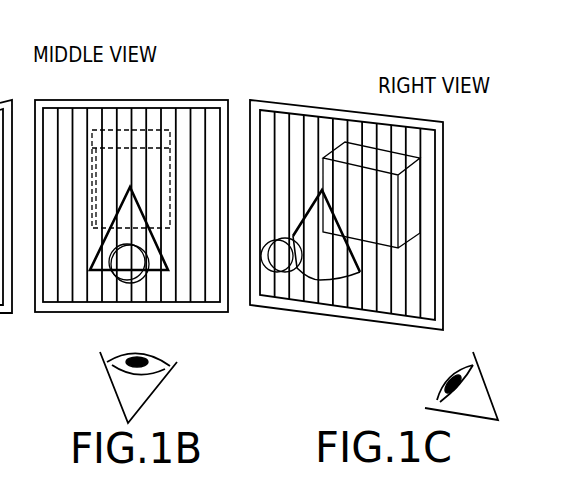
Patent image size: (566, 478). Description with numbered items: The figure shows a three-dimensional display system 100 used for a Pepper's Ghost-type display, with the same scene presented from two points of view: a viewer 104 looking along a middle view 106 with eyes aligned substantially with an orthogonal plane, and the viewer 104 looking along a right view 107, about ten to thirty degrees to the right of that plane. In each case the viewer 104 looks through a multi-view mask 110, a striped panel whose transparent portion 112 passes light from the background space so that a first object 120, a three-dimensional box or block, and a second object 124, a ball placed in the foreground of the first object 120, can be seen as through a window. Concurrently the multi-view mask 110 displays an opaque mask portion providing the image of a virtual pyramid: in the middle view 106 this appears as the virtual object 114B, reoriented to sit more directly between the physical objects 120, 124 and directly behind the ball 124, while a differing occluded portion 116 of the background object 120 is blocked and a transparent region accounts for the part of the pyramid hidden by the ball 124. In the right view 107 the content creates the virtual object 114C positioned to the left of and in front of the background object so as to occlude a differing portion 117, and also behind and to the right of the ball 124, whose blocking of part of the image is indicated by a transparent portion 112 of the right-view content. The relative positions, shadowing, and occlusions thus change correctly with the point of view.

In FIG. 1B, the 3D display system 100 is at (213, 80).
In FIG. 1C, the 3D display system 100 is at (460, 182).
In FIG. 1B, the viewer 104 is at (160, 385).
In FIG. 1C, the viewer 104 is at (490, 390).
In FIG. 1B, the middle view 106 is at (136, 321).
In FIG. 1C, the right view 107 is at (437, 372).
In FIG. 1B, the multi-view mask 110 is at (78, 327).
In FIG. 1C, the multi-view mask 110 is at (330, 332).
In FIG. 1B, the transparent portion 112 is at (63, 257).
In FIG. 1C, the transparent portion 112 is at (413, 298).
In FIG. 1B, the virtual object image for middle point of view 114B is at (163, 243).
In FIG. 1C, the virtual object image for right point of view 114C is at (357, 277).
In FIG. 1B, the occluded portion of background object 116 is at (147, 215).
In FIG. 1C, the occluded portion of object 117 is at (345, 237).
In FIG. 1B, the first object 120 is at (172, 200).
In FIG. 1C, the first object 120 is at (422, 192).
In FIG. 1B, the second object 124 is at (127, 280).
In FIG. 1C, the second object 124 is at (283, 277).